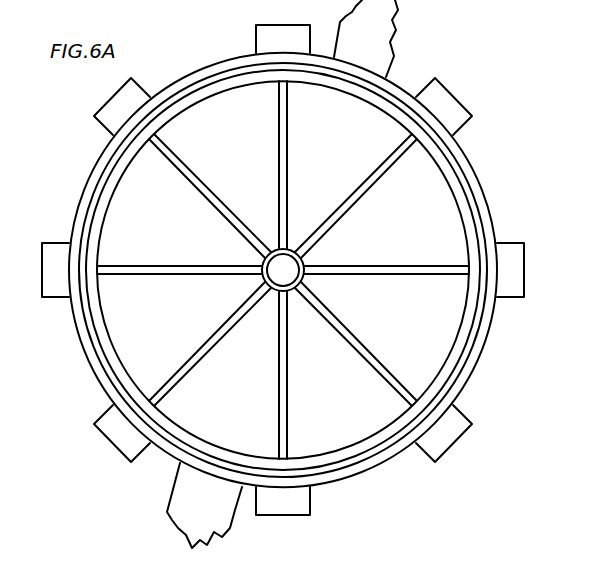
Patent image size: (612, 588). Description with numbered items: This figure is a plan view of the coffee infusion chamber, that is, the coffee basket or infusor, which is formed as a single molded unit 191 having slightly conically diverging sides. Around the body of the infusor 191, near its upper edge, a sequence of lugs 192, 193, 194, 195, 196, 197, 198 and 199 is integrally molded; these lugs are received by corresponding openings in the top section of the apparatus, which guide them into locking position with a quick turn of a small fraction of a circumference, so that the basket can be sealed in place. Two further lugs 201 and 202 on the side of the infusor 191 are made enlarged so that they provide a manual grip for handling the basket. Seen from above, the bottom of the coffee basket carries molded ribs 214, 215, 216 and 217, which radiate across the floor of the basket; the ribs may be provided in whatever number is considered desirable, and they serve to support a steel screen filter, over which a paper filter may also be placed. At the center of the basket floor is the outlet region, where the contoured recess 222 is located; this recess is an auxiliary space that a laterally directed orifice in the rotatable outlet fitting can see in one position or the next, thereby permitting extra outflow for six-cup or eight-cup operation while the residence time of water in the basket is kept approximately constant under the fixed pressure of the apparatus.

The single molded unit 191 is at (71, 376).
The lug 192 is at (447, 98).
The lug 193 is at (262, 30).
The lug 194 is at (137, 90).
The lug 195 is at (55, 257).
The lug 196 is at (107, 423).
The lug 197 is at (297, 507).
The lug 198 is at (453, 422).
The lug 199 is at (505, 252).
The enlarged lug 201 is at (210, 530).
The enlarged lug 202 is at (372, 32).
The molded rib 214 is at (278, 98).
The molded rib 215 is at (443, 227).
The molded rib 216 is at (288, 423).
The molded rib 217 is at (130, 267).
The contoured recess 222 is at (308, 258).